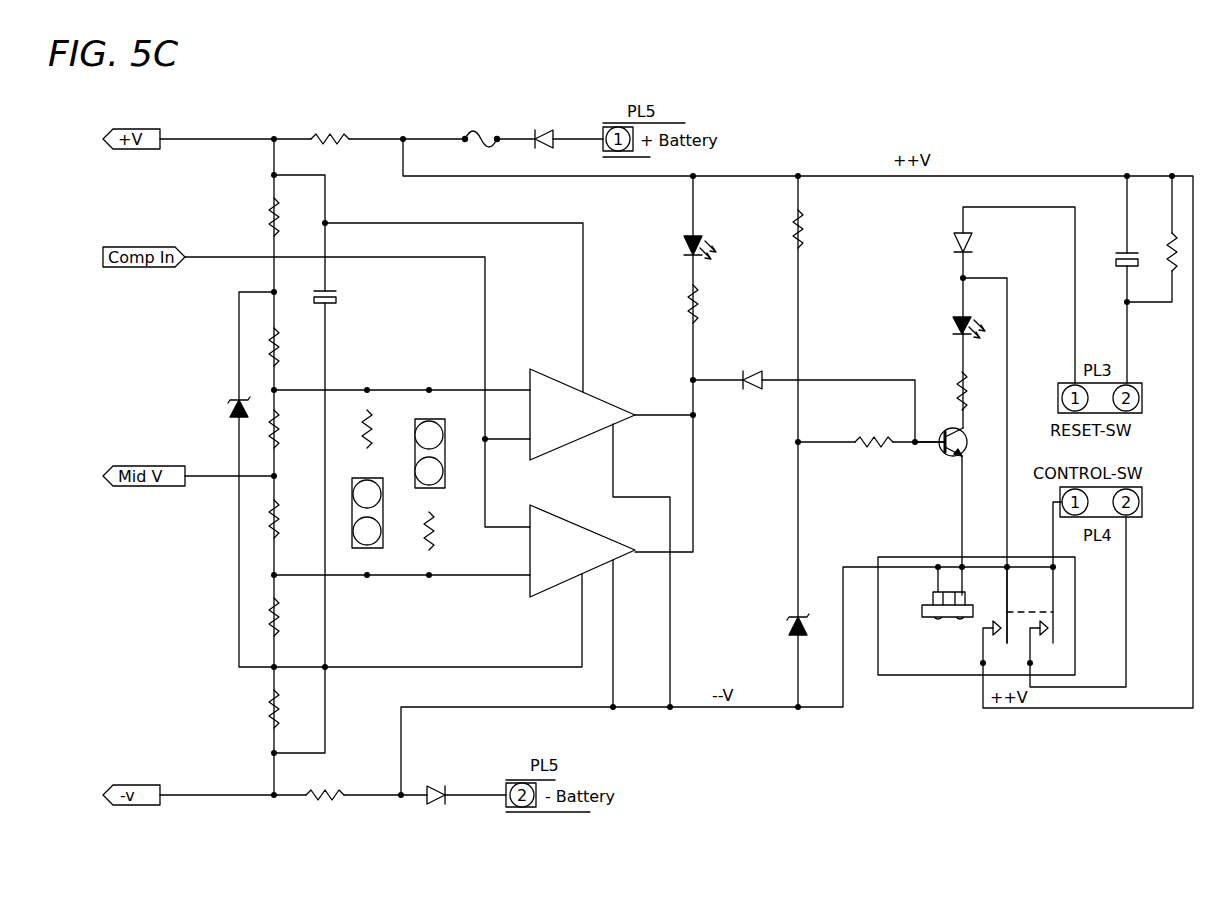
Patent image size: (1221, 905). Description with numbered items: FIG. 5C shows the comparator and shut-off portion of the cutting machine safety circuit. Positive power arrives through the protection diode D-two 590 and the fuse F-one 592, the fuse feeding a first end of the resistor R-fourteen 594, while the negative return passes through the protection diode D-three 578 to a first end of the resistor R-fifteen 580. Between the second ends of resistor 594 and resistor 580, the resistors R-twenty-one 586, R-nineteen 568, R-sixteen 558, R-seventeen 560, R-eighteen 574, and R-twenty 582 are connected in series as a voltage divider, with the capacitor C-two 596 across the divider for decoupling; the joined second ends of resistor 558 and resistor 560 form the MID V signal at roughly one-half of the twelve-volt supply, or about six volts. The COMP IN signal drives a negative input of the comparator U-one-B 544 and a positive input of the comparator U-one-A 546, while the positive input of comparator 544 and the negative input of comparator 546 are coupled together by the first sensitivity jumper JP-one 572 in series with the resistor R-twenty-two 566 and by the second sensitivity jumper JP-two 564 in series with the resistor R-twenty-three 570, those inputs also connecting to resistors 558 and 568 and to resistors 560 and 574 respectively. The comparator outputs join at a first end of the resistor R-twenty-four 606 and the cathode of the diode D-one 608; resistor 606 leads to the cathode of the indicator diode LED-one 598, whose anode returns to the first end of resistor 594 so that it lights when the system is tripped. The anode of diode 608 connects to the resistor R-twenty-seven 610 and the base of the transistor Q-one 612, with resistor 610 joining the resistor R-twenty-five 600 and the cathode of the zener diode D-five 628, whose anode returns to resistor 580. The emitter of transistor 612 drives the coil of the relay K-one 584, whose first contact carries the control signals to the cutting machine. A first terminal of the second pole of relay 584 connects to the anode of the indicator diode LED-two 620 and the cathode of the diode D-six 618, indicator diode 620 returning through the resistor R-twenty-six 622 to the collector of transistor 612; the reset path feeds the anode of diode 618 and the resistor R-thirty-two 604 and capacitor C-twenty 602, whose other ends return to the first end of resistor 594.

The comparator U1-B 544 is at (593, 395).
The comparator U1-A 546 is at (542, 505).
The resistor R16 558 is at (298, 400).
The resistor R17 560 is at (258, 525).
The second sensitivity jumper JP2 564 is at (447, 428).
The resistor R22 566 is at (388, 400).
The resistor R19 568 is at (318, 348).
The resistor R23 570 is at (465, 557).
The first sensitivity jumper JP1 572 is at (388, 528).
The resistor R18 574 is at (258, 618).
The protection diode D3 578 is at (438, 752).
The resistor R15 580 is at (323, 832).
The resistor R20 582 is at (258, 711).
The relay K1 584 is at (200, 370).
The resistor R21 586 is at (240, 190).
The protection diode D2 590 is at (557, 95).
The fuse F1 592 is at (467, 98).
The resistor R14 594 is at (322, 95).
The capacitor C2 596 is at (384, 297).
The indicator diode LED1 598 is at (672, 240).
The resistor R25 600 is at (825, 187).
The capacitor C20 602 is at (1095, 207).
The resistor R32 604 is at (1143, 193).
The resistor R24 606 is at (672, 303).
The diode D1 608 is at (747, 422).
The resistor R27 610 is at (848, 480).
The transistor Q1 612 is at (972, 458).
The diode D6 618 is at (987, 207).
The indicator diode LED2 620 is at (893, 320).
The resistor R26 622 is at (948, 392).
The zener diode D5 628 is at (765, 588).